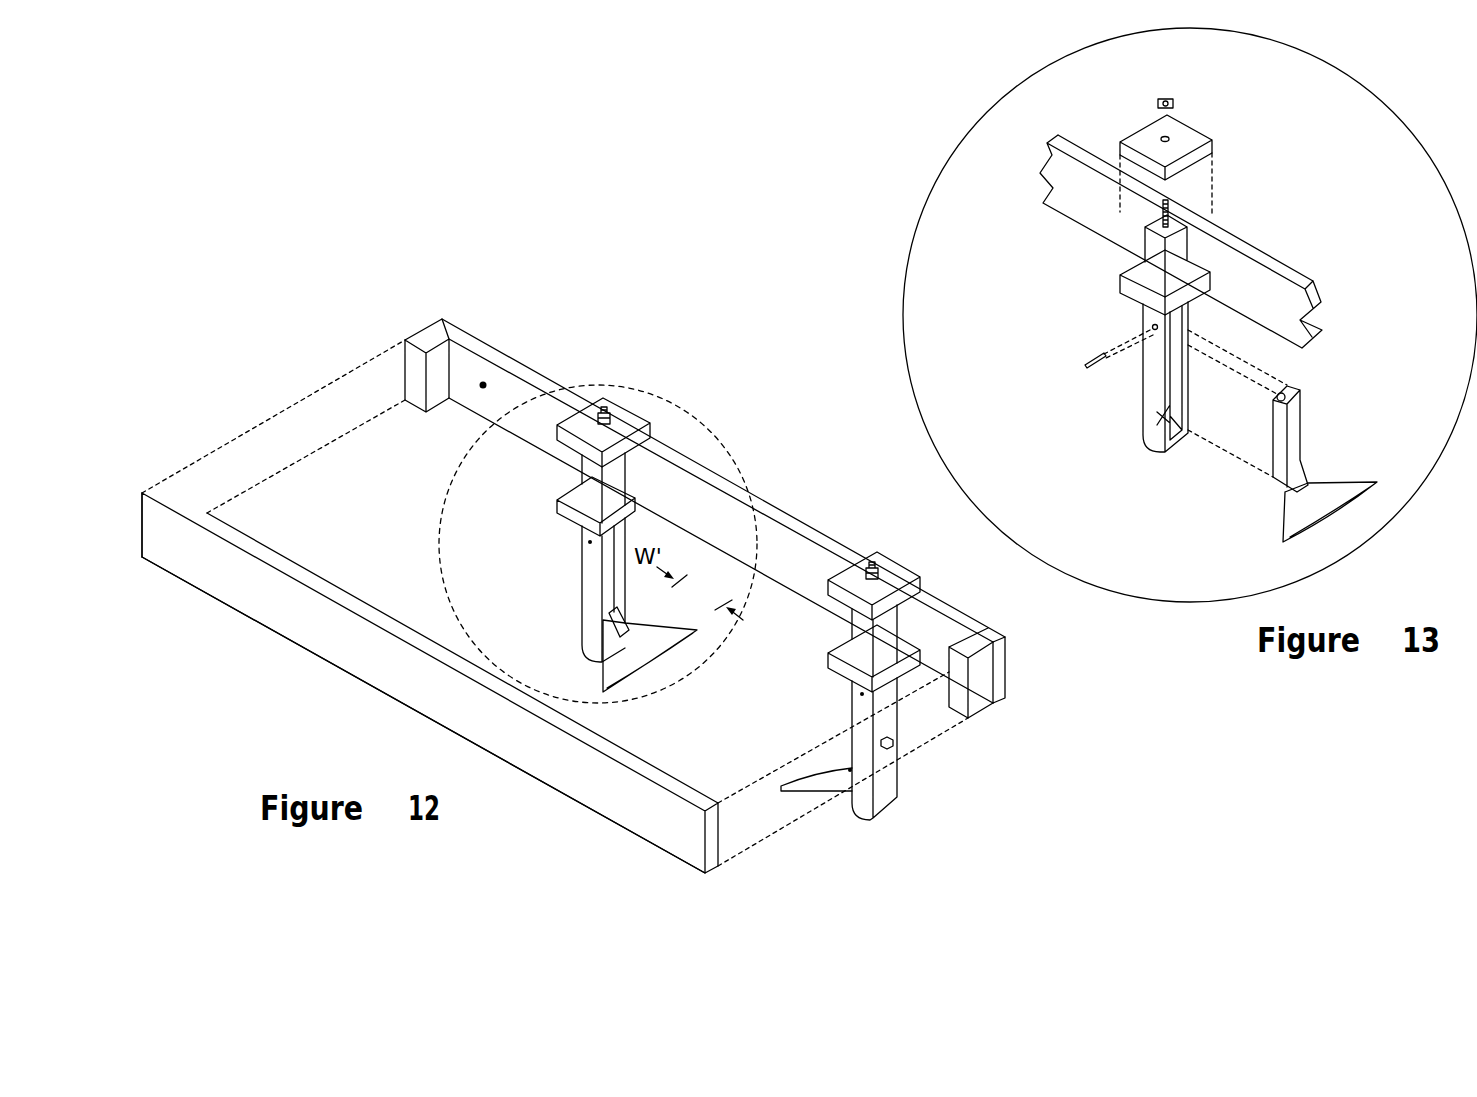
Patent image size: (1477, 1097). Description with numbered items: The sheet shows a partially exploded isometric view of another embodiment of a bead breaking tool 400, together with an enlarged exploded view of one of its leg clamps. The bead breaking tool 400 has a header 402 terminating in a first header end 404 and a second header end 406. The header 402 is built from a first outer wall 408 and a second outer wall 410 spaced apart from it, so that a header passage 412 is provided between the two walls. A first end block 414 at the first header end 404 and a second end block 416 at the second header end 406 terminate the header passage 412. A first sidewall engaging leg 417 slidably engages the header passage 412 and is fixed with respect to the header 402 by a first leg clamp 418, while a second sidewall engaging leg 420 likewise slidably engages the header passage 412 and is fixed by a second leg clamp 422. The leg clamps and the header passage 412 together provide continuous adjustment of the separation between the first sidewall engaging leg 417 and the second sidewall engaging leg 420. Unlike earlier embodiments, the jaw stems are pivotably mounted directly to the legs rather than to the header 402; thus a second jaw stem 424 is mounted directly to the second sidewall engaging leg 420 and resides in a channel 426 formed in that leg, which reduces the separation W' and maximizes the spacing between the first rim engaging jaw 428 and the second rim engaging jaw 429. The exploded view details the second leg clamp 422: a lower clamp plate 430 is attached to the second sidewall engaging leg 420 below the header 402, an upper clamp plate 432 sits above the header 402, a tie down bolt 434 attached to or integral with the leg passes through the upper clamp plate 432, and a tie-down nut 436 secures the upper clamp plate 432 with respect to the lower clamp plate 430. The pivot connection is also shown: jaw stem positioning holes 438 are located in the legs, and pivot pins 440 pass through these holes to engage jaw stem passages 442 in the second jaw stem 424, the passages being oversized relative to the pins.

In FIG. 12, the bead breaking tool 400 is at (595, 352).
In FIG. 12, the header 402 is at (315, 690).
In FIG. 12, the first header end 404 is at (1000, 635).
In FIG. 12, the second header end 406 is at (150, 490).
In FIG. 12, the first outer wall 408 is at (583, 776).
In FIG. 12, the second outer wall 410 is at (843, 548).
In FIG. 13, the second outer wall 410 is at (1275, 262).
In FIG. 12, the header passage 412 is at (485, 383).
In FIG. 12, the first end block 414 is at (983, 705).
In FIG. 12, the second end block 416 is at (425, 335).
In FIG. 12, the first sidewall engaging leg 417 is at (880, 797).
In FIG. 12, the first leg clamp 418 is at (810, 668).
In FIG. 12, the second sidewall engaging leg 420 is at (578, 609).
In FIG. 13, the second sidewall engaging leg 420 is at (1143, 398).
In FIG. 12, the second leg clamp 422 is at (540, 513).
In FIG. 13, the second leg clamp 422 is at (1344, 227).
In FIG. 12, the second jaw stem 424 is at (613, 562).
In FIG. 13, the second jaw stem 424 is at (1293, 445).
In FIG. 13, the channel 426 is at (1177, 392).
In FIG. 12, the first rim engaging jaw 428 is at (815, 770).
In FIG. 12, the second rim engaging jaw 429 is at (655, 655).
In FIG. 13, the second rim engaging jaw 429 is at (1333, 507).
In FIG. 13, the lower clamp plate 430 is at (1137, 287).
In FIG. 13, the upper clamp plate 432 is at (1190, 138).
In FIG. 13, the tie down bolt 434 is at (1170, 212).
In FIG. 13, the tie-down nut 436 is at (1175, 98).
In FIG. 13, the jaw stem positioning holes 438 is at (1152, 327).
In FIG. 13, the pivot pins 440 is at (1085, 366).
In FIG. 13, the jaw stem passages 442 is at (1278, 400).